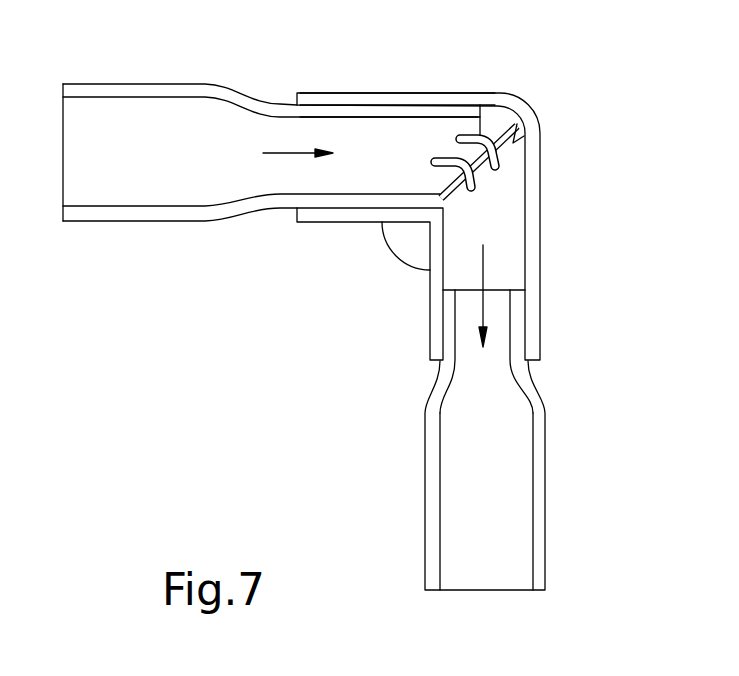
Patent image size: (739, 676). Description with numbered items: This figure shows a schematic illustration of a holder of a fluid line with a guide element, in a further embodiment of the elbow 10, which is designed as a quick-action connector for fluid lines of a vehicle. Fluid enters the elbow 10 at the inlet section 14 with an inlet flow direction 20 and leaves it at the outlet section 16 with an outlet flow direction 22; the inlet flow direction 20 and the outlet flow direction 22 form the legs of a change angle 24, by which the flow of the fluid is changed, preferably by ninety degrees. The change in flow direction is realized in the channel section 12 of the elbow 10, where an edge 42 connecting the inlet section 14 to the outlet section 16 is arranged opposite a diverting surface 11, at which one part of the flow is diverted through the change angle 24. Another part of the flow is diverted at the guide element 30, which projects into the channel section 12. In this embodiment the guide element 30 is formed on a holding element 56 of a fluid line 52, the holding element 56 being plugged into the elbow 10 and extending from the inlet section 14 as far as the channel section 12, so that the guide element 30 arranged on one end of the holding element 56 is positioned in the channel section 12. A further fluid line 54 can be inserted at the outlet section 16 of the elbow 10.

The elbow 10 is at (566, 71).
The diverting surface 11 is at (514, 142).
The channel section 12 is at (541, 180).
The inlet section 14 is at (323, 92).
The outlet section 16 is at (533, 317).
The inlet flow direction 20 is at (278, 153).
The outlet flow direction 22 is at (484, 265).
The change angle 24 is at (407, 242).
The guide element 30 is at (478, 135).
The edge 42 is at (453, 192).
The fluid line 52 is at (176, 93).
The further fluid line 54 is at (537, 472).
The holding element 56 is at (367, 112).